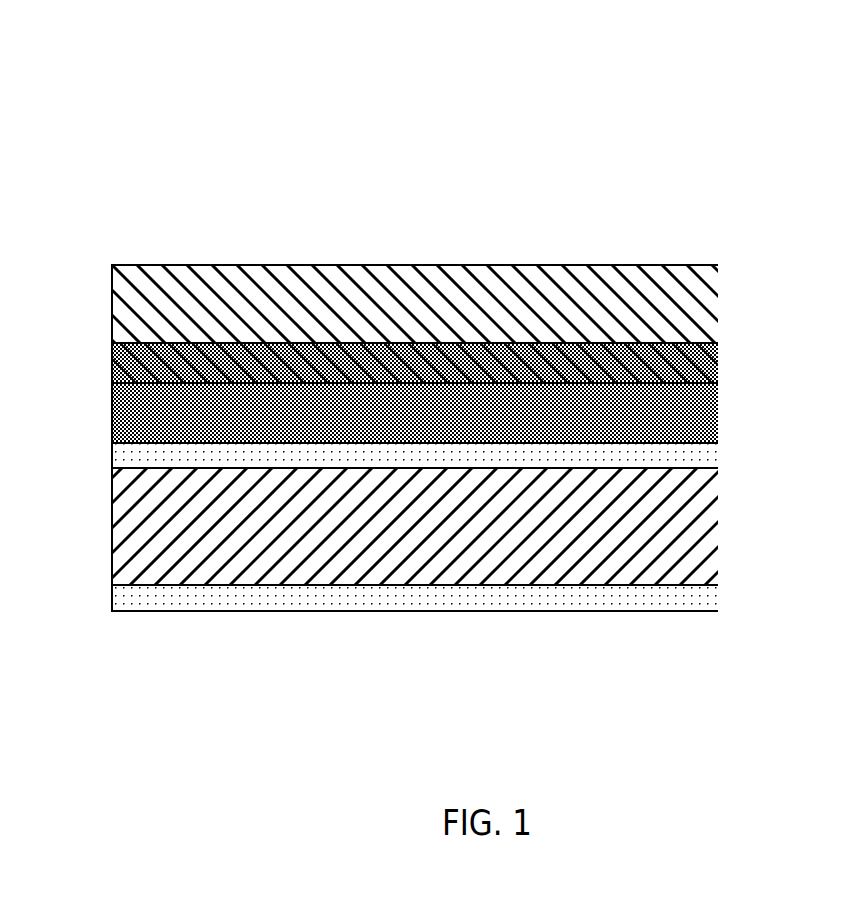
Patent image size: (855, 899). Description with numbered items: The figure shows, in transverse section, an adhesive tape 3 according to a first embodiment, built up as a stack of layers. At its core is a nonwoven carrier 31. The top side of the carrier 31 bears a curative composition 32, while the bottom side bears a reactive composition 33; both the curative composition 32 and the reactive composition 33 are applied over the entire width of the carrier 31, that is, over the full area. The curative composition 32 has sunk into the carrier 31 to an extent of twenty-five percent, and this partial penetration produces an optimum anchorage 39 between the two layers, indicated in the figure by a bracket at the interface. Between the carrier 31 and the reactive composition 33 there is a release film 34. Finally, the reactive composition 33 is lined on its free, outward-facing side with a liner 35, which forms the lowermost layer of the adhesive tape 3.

The adhesive tape 3 is at (413, 383).
The nonwoven carrier 31 is at (545, 412).
The curative composition 32 is at (280, 283).
The reactive composition 33 is at (517, 557).
The release film 34 is at (259, 455).
The liner 35 is at (657, 593).
The anchorage 39 is at (95, 338).